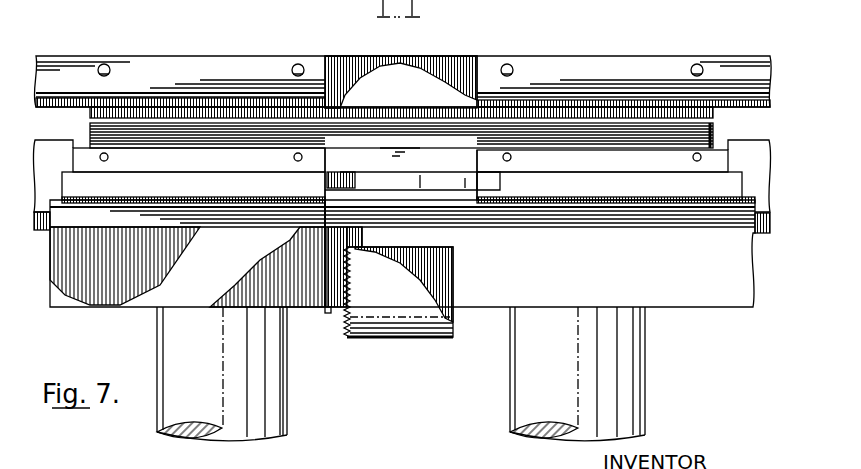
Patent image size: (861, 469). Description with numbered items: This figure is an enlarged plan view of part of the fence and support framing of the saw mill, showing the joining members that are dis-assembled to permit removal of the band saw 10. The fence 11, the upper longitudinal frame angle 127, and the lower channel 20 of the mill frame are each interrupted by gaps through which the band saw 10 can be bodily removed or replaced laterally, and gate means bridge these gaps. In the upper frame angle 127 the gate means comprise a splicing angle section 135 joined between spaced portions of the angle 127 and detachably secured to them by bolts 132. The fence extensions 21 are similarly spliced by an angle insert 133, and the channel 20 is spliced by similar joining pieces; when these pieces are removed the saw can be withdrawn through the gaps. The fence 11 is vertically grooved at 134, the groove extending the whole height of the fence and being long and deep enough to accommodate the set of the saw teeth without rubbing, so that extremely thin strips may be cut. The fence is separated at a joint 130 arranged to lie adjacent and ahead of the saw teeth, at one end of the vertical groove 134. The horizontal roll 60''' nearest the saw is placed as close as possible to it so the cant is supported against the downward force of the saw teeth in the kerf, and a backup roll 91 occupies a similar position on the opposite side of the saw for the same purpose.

The band saw 10 is at (403, 336).
The fence 11 is at (120, 308).
The lower channel 20 is at (53, 142).
The fence extensions 21 is at (200, 156).
The horizontal roll 60''' is at (243, 374).
The backup roll 91 is at (510, 380).
The upper longitudinal frame angle 127 is at (197, 60).
The joint 130 is at (326, 314).
The bolts 132 is at (107, 155).
The angle insert 133 is at (447, 164).
The vertical groove 134 is at (342, 313).
The splicing angle section 135 is at (370, 62).